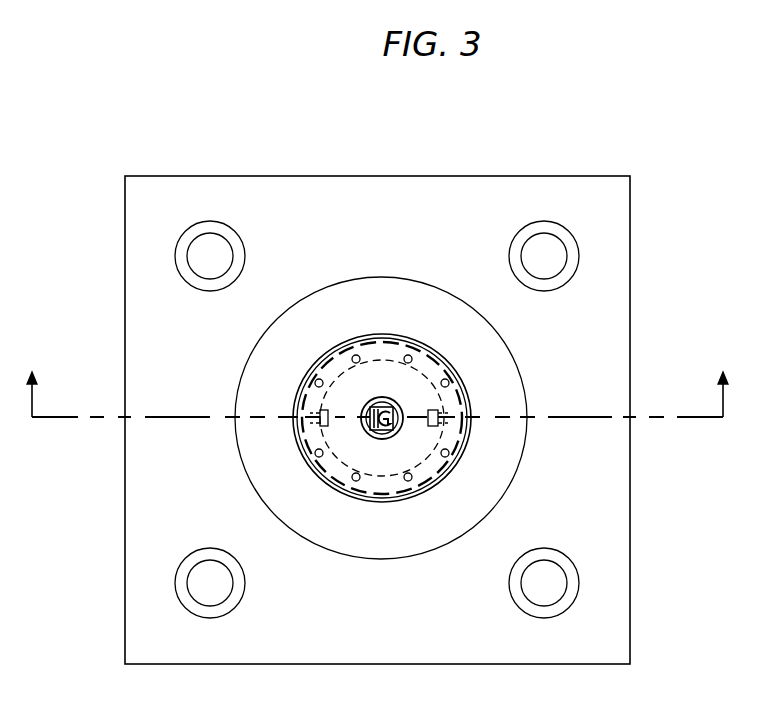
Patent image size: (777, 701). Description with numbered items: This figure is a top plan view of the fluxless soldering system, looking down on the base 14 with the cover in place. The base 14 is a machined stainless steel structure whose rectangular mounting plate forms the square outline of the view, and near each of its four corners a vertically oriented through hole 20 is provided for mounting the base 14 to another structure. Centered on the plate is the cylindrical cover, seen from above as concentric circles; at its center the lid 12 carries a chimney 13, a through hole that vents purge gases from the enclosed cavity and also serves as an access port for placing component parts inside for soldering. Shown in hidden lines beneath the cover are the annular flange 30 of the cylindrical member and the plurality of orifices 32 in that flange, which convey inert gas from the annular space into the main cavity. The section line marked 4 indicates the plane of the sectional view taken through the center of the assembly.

The section line 4- 4 is at (378, 393).
The lid 12 is at (408, 387).
The chimney 13 is at (403, 416).
The base 14 is at (600, 500).
The through holes 20 is at (544, 583).
The annular flange 30 is at (389, 362).
The orifices 32 is at (420, 356).